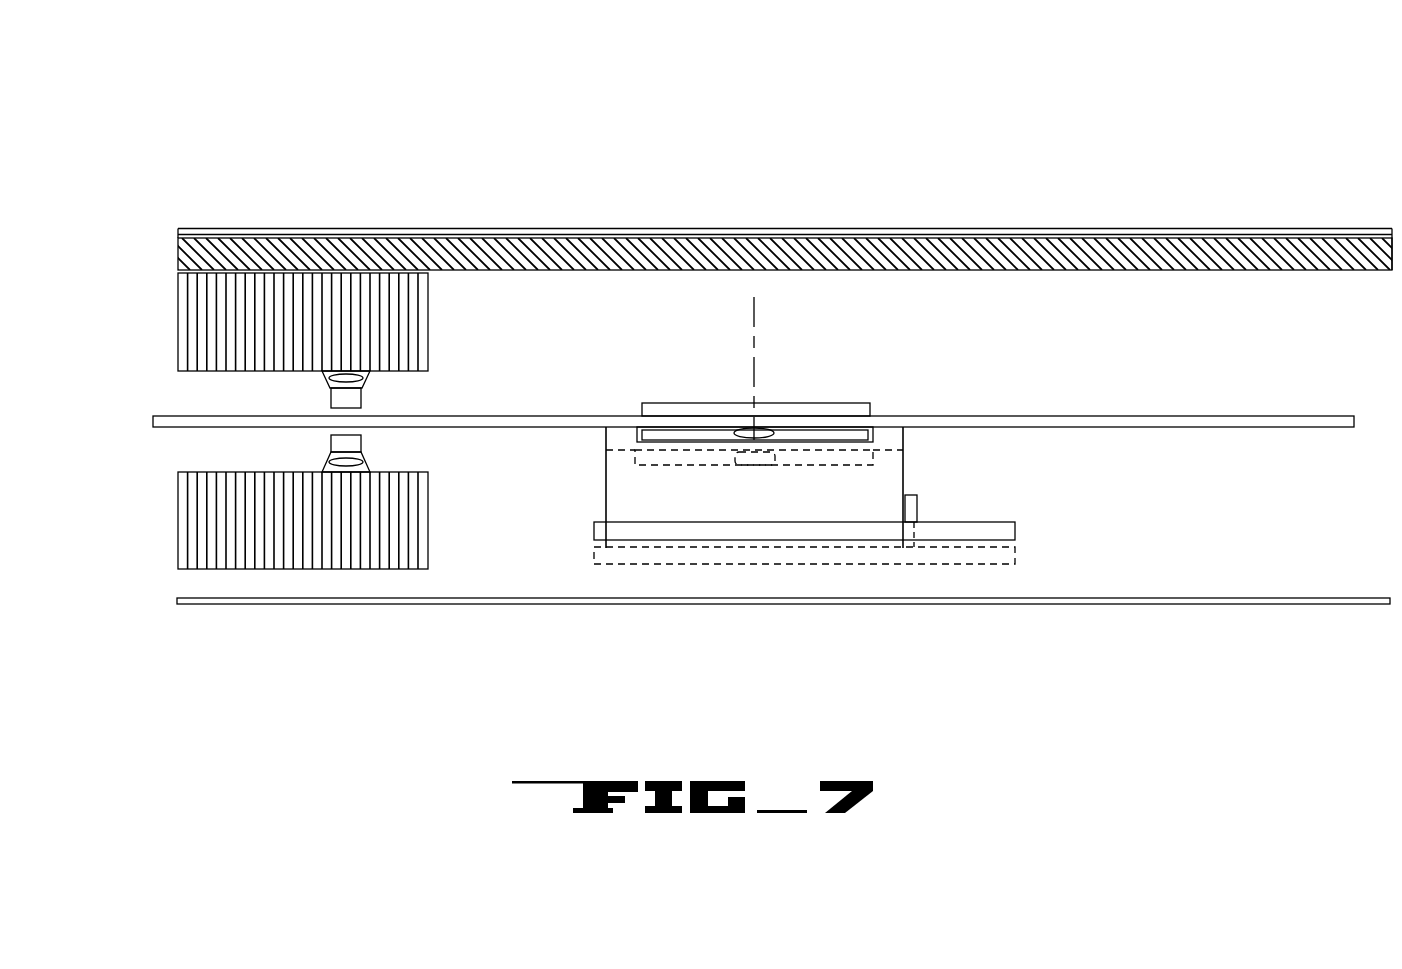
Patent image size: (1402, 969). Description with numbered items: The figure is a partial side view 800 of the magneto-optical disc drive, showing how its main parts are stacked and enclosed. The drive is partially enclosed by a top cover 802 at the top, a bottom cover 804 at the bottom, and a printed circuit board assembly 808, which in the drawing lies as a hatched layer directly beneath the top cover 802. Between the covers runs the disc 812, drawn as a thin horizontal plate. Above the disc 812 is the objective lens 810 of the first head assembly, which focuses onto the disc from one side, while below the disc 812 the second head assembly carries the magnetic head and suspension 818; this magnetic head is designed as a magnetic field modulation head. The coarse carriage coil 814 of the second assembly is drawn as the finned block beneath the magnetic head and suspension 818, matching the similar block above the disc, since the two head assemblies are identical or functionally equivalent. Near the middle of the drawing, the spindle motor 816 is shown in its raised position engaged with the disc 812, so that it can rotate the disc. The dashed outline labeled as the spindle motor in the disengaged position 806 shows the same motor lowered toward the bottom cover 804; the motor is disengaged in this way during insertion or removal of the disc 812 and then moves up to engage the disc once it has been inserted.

The side view 800 is at (420, 54).
The top cover 802 is at (417, 228).
The bottom cover 804 is at (760, 604).
The spindle motor in the disengaged position 806 is at (680, 565).
The printed circuit board assembly 808 is at (178, 251).
The objective lens 810 is at (322, 378).
The disc 812 is at (153, 416).
The coarse carriage coil 814 is at (178, 520).
The spindle motor 816 is at (903, 472).
The magnetic head and suspension 818 is at (331, 447).